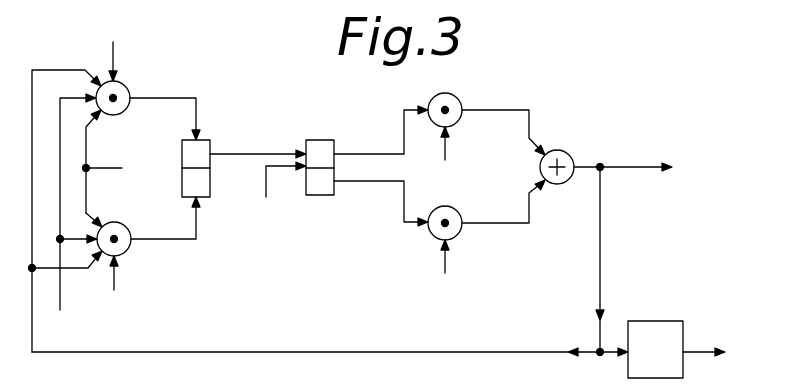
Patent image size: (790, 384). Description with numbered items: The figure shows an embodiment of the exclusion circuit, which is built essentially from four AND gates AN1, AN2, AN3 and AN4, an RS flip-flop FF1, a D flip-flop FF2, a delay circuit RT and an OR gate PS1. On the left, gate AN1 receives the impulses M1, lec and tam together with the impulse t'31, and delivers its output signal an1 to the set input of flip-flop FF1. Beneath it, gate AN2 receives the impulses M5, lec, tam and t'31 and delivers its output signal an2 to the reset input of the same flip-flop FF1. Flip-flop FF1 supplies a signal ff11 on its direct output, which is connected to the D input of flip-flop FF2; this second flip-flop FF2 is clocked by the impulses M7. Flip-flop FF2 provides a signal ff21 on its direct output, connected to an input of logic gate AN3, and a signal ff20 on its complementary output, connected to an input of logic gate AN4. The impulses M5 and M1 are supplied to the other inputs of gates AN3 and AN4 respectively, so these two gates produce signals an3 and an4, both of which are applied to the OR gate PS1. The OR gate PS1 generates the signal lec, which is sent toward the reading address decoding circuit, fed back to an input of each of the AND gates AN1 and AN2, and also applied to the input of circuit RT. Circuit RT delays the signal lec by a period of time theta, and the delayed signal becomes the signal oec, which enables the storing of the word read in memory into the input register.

The AND gate AN1 is at (129, 88).
The AND gate AN2 is at (108, 222).
The AND gate AN3 is at (458, 98).
The AND gate AN4 is at (456, 210).
The RS flip-flop FF1 is at (210, 140).
The D flip-flop FF2 is at (346, 131).
The OR gate PS1 is at (569, 154).
The delay circuit RT is at (357, 272).
The impulses M1 is at (113, 52).
The impulses M5 is at (114, 290).
The impulses M7 is at (266, 197).
The output signal an1 is at (196, 98).
The output signal an2 is at (190, 239).
The output signal an3 is at (529, 110).
The output signal an4 is at (512, 223).
The direct output signal ff11 is at (287, 141).
The direct output signal ff21 is at (385, 141).
The complementary output signal ff20 is at (356, 181).
The impulse t'31 is at (110, 168).
The impulse tam is at (60, 310).
The read signal lec is at (675, 167).
The delayed read signal oec is at (743, 347).